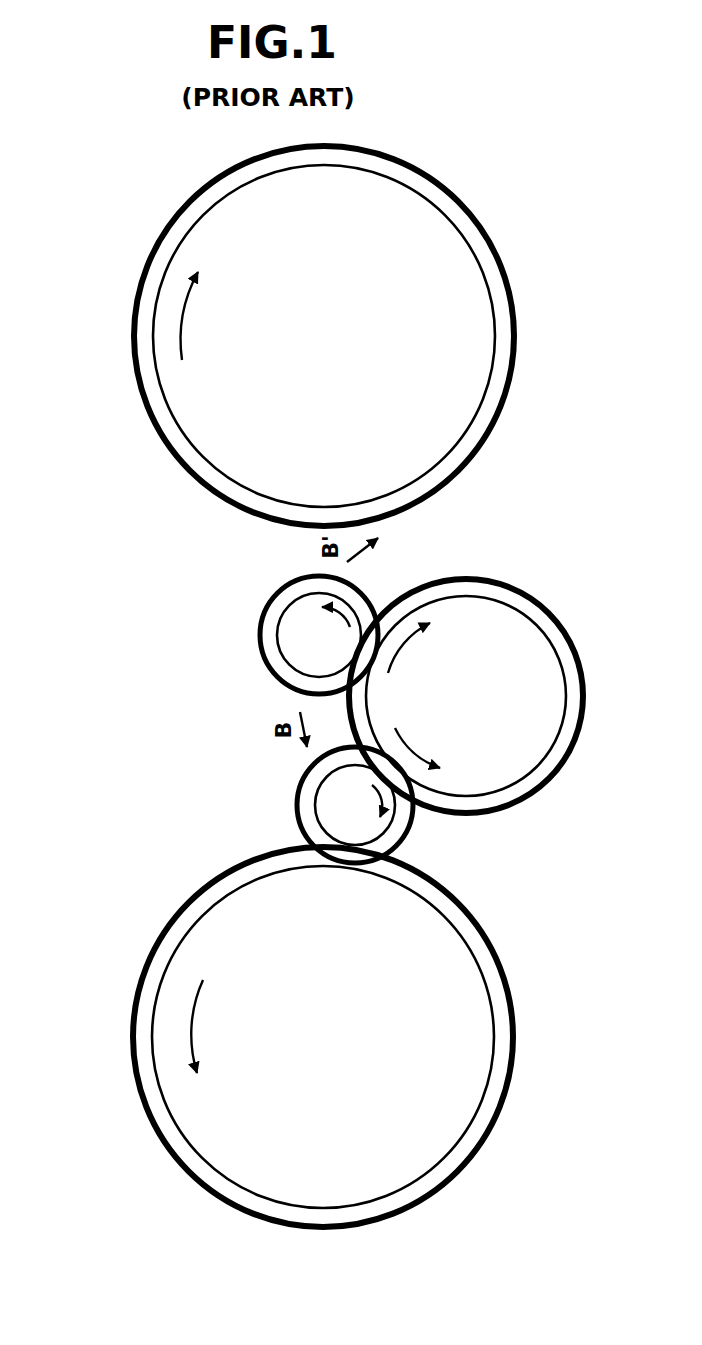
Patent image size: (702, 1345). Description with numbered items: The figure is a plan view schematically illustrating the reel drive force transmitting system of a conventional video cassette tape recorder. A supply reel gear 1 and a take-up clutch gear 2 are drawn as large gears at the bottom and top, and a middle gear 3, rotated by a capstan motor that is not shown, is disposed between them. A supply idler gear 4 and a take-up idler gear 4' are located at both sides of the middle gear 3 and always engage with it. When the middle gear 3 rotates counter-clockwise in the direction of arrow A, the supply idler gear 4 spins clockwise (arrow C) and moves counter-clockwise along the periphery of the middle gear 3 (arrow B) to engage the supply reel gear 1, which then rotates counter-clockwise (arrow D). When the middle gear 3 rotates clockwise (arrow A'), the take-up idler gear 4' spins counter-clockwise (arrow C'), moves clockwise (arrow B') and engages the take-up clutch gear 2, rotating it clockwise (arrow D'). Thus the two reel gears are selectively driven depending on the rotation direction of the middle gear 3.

The supply reel gear 1 is at (152, 1060).
The take-up clutch gear 2 is at (150, 362).
The middle gear 3 is at (508, 617).
The supply idler gear 4 is at (317, 805).
The take-up idler gear 4' is at (284, 635).